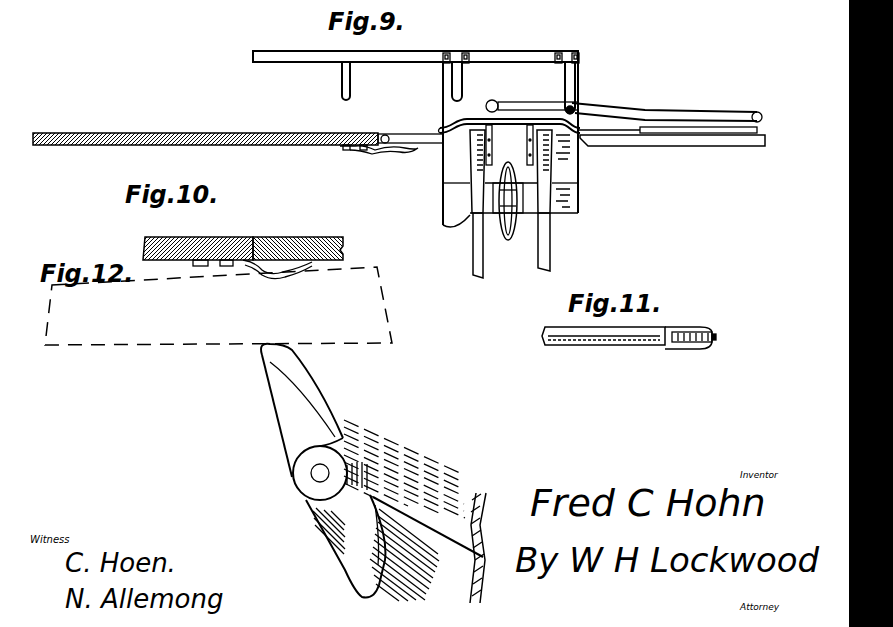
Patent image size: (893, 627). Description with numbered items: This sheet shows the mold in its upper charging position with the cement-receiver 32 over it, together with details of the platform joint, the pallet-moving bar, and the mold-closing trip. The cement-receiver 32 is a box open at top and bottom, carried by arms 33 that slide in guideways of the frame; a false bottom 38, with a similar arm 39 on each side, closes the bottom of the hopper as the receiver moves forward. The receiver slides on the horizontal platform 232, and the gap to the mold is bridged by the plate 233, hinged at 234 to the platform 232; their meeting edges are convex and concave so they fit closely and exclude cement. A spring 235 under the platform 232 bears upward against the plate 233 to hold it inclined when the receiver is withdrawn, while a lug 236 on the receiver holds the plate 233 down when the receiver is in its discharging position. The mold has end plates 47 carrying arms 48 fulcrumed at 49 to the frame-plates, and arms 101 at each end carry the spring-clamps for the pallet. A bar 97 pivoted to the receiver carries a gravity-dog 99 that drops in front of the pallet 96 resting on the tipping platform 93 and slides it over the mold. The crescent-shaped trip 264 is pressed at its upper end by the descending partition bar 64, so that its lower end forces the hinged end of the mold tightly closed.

In FIG. 9, the cement-receiver 32 is at (510, 143).
In FIG. 9, the arms 33 is at (462, 77).
In FIG. 9, the false bottom 38 is at (301, 62).
In FIG. 9, the arm 39 is at (351, 76).
In FIG. 9, the end plate 47 is at (572, 176).
In FIG. 12, the end plate 47 is at (399, 511).
In FIG. 9, the arms 48 is at (548, 244).
In FIG. 9, the fulcrum 49 is at (462, 201).
In FIG. 12, the bar 64 is at (218, 306).
In FIG. 9, the platform 93 is at (738, 141).
In FIG. 9, the pallet 96 is at (707, 133).
In FIG. 9, the bar 97 is at (612, 105).
In FIG. 11, the bar 97 is at (620, 346).
In FIG. 9, the gravity-dog 99 is at (762, 122).
In FIG. 11, the gravity-dog 99 is at (718, 337).
In FIG. 9, the arm 101 is at (468, 121).
In FIG. 9, the platform 232 is at (172, 131).
In FIG. 10, the platform 232 is at (186, 235).
In FIG. 9, the plate 233 is at (427, 145).
In FIG. 10, the plate 233 is at (287, 235).
In FIG. 9, the hinge 234 is at (381, 132).
In FIG. 9, the spring 235 is at (400, 153).
In FIG. 10, the spring 235 is at (264, 270).
In FIG. 9, the lug 236 is at (440, 126).
In FIG. 9, the trip 264 is at (511, 240).
In FIG. 12, the trip 264 is at (298, 397).